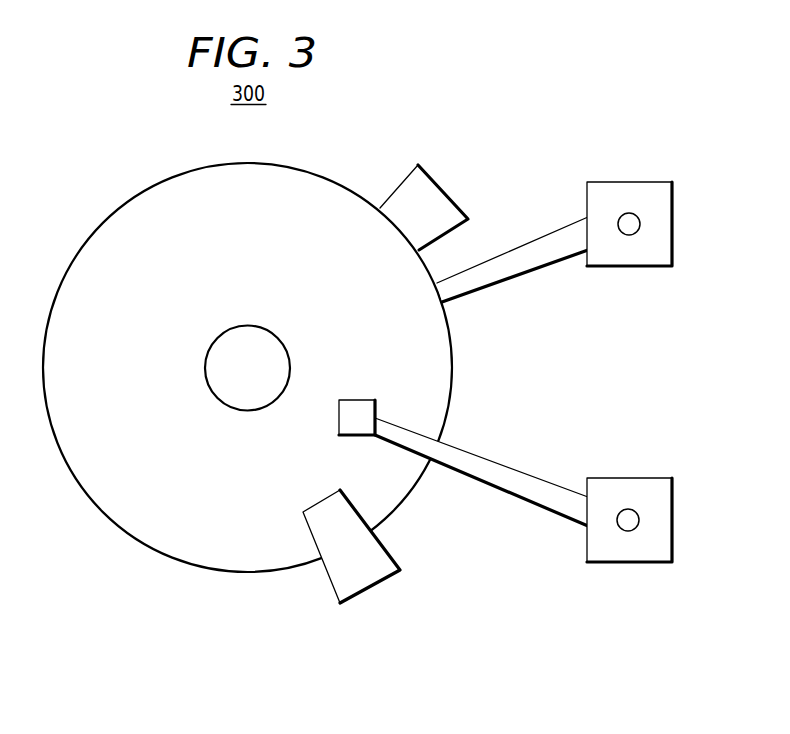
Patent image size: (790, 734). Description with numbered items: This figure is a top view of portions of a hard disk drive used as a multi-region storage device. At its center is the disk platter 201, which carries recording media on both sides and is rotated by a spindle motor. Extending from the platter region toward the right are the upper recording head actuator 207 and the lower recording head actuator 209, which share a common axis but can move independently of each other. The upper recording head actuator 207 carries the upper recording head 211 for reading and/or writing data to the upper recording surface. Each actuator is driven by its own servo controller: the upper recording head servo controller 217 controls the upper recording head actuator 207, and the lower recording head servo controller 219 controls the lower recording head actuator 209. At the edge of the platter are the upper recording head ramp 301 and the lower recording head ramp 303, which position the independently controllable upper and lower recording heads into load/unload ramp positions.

The disk platter 201 is at (105, 222).
The upper recording head actuator 207 is at (485, 458).
The lower recording head actuator 209 is at (485, 287).
The upper recording head 211 is at (353, 400).
The upper recording head servo controller 217 is at (623, 477).
The lower recording head servo controller 219 is at (622, 180).
The upper recording head ramp 301 is at (442, 190).
The lower recording head ramp 303 is at (367, 592).